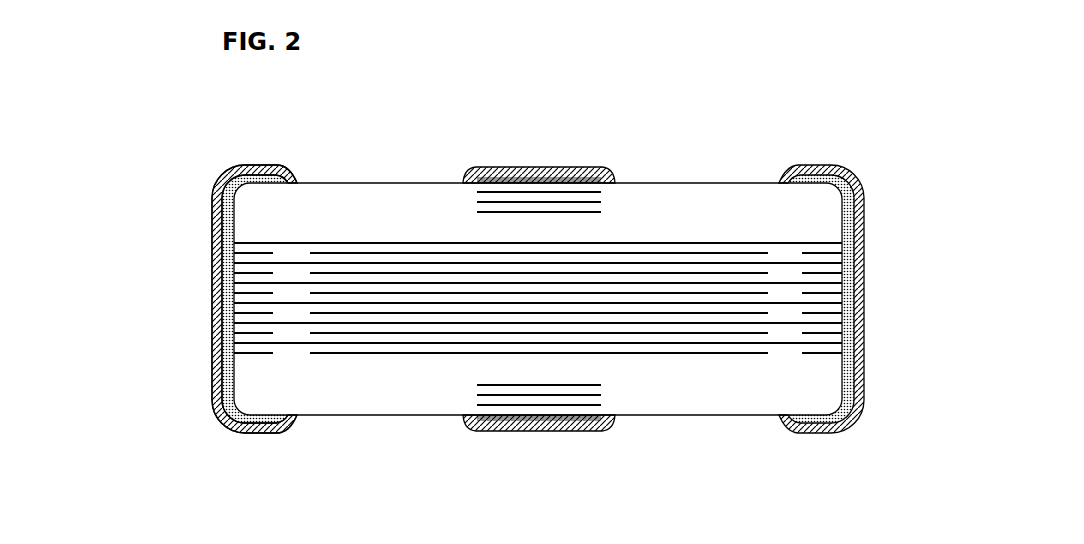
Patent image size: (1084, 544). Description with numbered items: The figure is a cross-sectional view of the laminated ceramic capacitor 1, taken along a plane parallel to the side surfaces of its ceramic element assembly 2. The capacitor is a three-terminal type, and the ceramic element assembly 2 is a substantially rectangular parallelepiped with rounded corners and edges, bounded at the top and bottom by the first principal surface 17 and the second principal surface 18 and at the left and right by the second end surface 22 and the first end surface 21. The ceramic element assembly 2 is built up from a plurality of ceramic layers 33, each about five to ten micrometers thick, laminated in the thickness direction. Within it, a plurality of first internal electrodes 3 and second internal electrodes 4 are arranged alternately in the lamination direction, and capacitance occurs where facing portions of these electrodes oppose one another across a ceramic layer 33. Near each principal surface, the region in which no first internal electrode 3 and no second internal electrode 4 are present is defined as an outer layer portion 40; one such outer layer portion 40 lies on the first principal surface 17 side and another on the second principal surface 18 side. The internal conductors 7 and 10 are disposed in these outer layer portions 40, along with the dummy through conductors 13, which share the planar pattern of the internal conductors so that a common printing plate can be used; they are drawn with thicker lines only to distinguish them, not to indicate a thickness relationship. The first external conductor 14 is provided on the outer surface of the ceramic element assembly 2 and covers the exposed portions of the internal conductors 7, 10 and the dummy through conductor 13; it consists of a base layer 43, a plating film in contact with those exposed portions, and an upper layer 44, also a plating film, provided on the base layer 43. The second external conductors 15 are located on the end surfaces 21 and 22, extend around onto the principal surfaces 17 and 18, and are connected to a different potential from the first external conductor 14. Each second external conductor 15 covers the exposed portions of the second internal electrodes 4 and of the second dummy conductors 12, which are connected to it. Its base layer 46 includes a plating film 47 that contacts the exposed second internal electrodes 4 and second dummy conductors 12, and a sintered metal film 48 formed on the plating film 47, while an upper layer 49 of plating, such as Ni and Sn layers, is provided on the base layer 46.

The laminated ceramic capacitor 1 is at (353, 67).
The ceramic element assembly 2 is at (715, 181).
The first internal electrode 3 is at (684, 334).
The second internal electrode 4 is at (787, 324).
The third internal conductor 7 is at (518, 129).
The sixth internal conductor 10 is at (537, 431).
The second dummy conductor 12 is at (259, 253).
The dummy through conductor 13 is at (588, 190).
The first external conductor 14 is at (518, 129).
The second external conductor 15 is at (489, 266).
The first principal surface 17 is at (333, 183).
The second principal surface 18 is at (392, 417).
The first end surface 21 is at (851, 217).
The second end surface 22 is at (217, 195).
The ceramic layer 33 is at (352, 335).
The outer layer portion 40 is at (205, 185).
The base layer 43 is at (503, 168).
The upper layer 44 is at (522, 168).
The base layer 46 is at (200, 299).
The plating film 47 is at (225, 258).
The sintered metal film 48 is at (222, 286).
The upper layer 49 is at (218, 316).